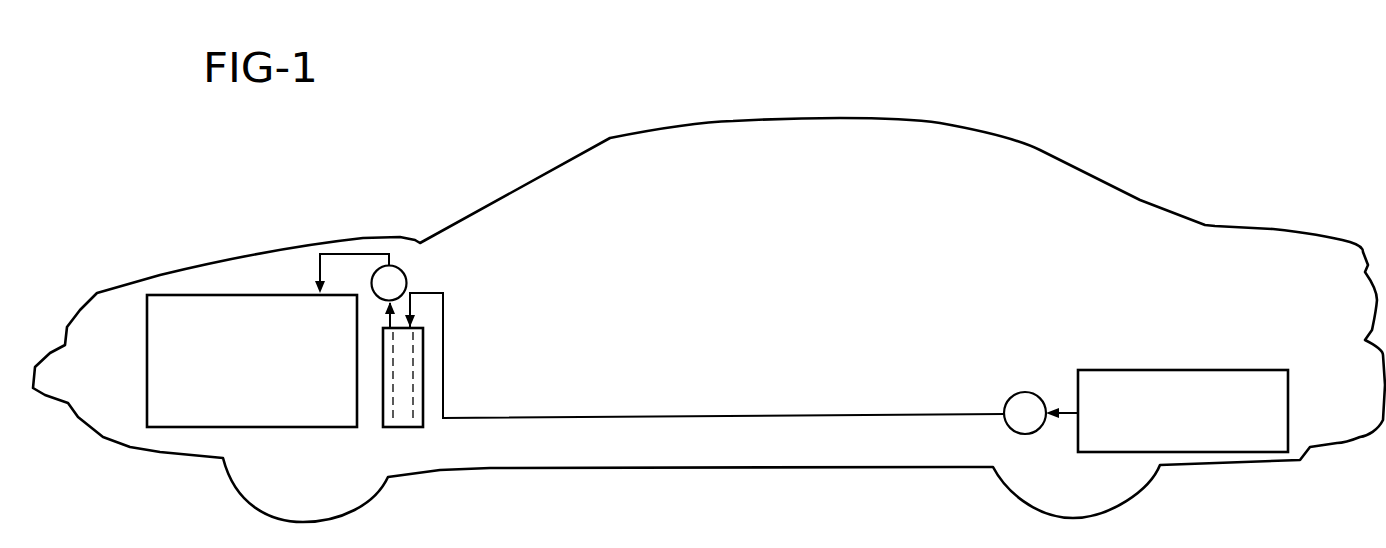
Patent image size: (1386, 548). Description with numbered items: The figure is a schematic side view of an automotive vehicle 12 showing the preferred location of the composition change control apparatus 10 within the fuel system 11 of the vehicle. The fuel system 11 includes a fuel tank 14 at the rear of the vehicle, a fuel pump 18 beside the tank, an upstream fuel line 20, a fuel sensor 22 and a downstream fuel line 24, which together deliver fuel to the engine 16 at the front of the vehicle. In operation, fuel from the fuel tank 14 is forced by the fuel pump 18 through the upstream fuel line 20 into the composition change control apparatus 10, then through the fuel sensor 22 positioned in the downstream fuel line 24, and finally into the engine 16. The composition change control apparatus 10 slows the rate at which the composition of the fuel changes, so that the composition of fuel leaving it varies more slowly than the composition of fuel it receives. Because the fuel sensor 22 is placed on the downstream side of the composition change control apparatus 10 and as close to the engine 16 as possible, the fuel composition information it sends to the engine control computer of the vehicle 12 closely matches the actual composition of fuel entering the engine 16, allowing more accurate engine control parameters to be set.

The composition change control apparatus 10 is at (402, 427).
The fuel system 11 is at (847, 300).
The vehicle 12 is at (857, 93).
The fuel tank 14 is at (1197, 370).
The engine 16 is at (268, 427).
The fuel pump 18 is at (1025, 392).
The upstream fuel line 20 is at (645, 418).
The fuel sensor 22 is at (407, 272).
The downstream fuel line 24 is at (352, 254).